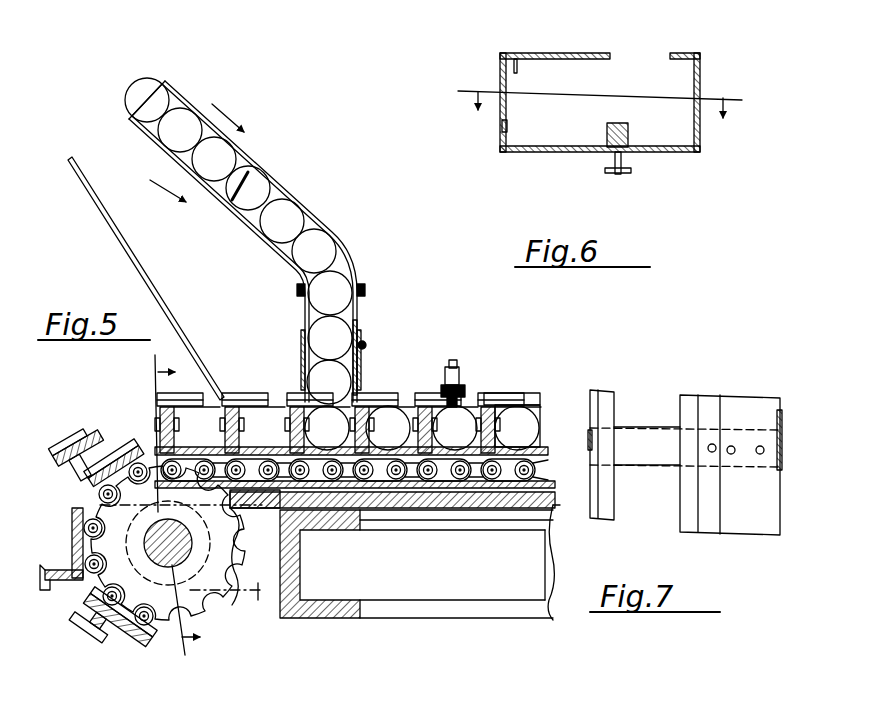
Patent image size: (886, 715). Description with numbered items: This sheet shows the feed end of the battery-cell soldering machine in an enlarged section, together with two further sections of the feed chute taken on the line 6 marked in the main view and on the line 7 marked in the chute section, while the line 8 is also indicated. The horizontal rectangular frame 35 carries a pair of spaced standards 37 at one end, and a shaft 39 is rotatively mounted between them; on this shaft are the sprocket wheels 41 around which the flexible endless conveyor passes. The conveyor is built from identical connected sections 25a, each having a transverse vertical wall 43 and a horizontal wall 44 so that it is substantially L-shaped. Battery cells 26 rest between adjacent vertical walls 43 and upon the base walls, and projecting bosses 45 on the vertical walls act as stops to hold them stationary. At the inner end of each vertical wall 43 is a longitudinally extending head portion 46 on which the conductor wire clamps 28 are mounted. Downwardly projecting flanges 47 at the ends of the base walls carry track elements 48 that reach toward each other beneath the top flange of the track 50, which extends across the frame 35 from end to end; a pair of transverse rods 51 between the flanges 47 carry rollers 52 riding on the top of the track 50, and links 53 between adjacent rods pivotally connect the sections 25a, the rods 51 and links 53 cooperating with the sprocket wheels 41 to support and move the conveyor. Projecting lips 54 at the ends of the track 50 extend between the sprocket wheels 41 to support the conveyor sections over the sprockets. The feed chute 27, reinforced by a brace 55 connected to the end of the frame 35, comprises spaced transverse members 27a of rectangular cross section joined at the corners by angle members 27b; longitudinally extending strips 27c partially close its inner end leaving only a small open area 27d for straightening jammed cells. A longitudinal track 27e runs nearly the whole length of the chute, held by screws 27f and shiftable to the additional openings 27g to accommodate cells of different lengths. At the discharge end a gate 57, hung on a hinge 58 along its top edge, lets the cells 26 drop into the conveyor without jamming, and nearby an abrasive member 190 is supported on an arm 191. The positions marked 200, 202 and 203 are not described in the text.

In FIG. 5, the section line 6— 6 is at (195, 144).
In FIG. 6, the section line 7— 7 is at (600, 93).
In FIG. 5, the section line 8- 8 is at (164, 505).
In FIG. 5, the conveyor sections 25a is at (78, 556).
In FIG. 5, the battery cells 26 is at (219, 155).
In FIG. 5, the feed chute 27 is at (240, 224).
In FIG. 5, the transverse members 27a is at (297, 290).
In FIG. 6, the transverse members 27a is at (525, 153).
In FIG. 7, the transverse members 27a is at (622, 436).
In FIG. 6, the angle members 27b is at (516, 66).
In FIG. 6, the longitudinally extending strips 27c is at (545, 53).
In FIG. 6, the open area 27d is at (627, 78).
In FIG. 6, the longitudinal track 27e is at (622, 126).
In FIG. 7, the longitudinal track 27e is at (712, 525).
In FIG. 6, the screws 27f is at (618, 162).
In FIG. 7, the additional openings 27g is at (760, 446).
In FIG. 5, the conductor wire clamps 28 is at (248, 398).
In FIG. 5, the frame 35 is at (322, 612).
In FIG. 5, the standards 37 is at (258, 592).
In FIG. 5, the shaft 39 is at (188, 550).
In FIG. 5, the sprocket wheels 41 is at (208, 604).
In FIG. 5, the vertical wall 43 is at (486, 462).
In FIG. 5, the horizontal wall 44 is at (545, 462).
In FIG. 5, the projecting bosses 45 is at (517, 426).
In FIG. 5, the head portion 46 is at (516, 412).
In FIG. 5, the flanges 47 is at (556, 516).
In FIG. 5, the track elements 48 is at (513, 510).
In FIG. 5, the track 50 is at (383, 492).
In FIG. 5, the transverse rods 51 is at (453, 535).
In FIG. 5, the rollers 52 is at (392, 492).
In FIG. 5, the links 53 is at (315, 492).
In FIG. 5, the projecting lips 54 is at (205, 484).
In FIG. 5, the brace 55 is at (146, 278).
In FIG. 5, the gate 57 is at (361, 372).
In FIG. 5, the hinge 58 is at (363, 343).
In FIG. 5, the abrasive member 190 is at (440, 389).
In FIG. 5, the arm 191 is at (452, 360).
In FIG. 5, the position 200 is at (368, 706).
In FIG. 5, the position 202 is at (428, 700).
In FIG. 5, the position 203 is at (538, 700).